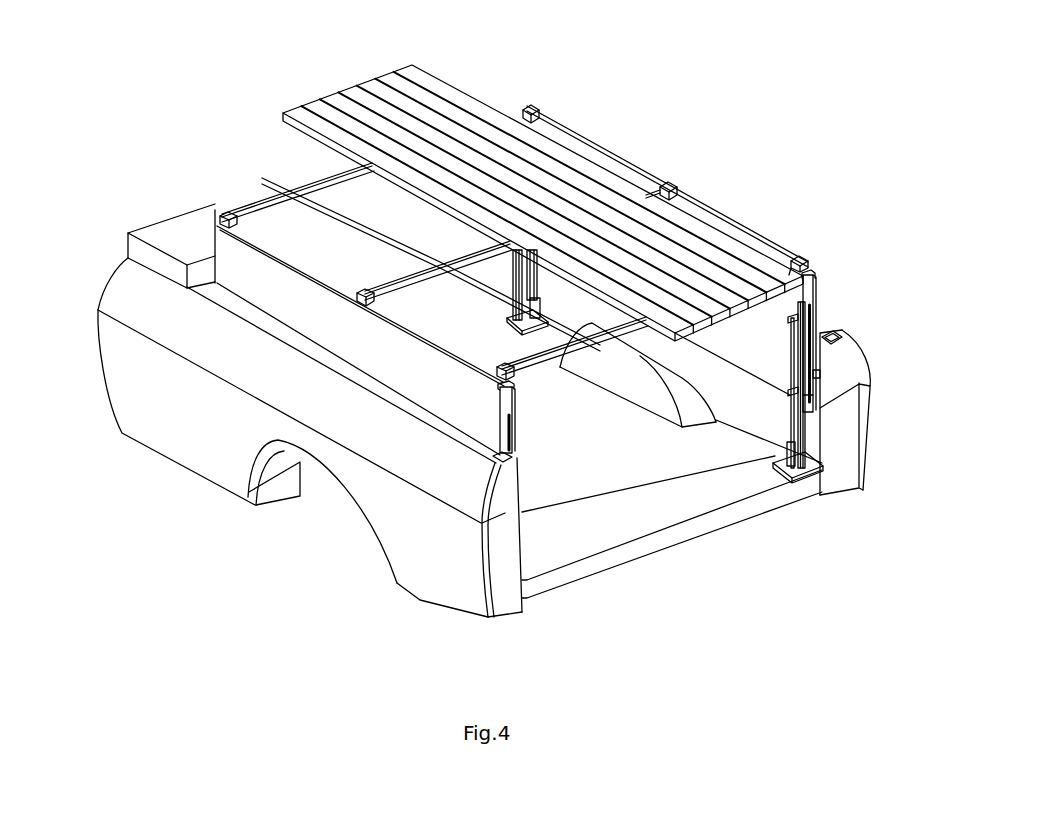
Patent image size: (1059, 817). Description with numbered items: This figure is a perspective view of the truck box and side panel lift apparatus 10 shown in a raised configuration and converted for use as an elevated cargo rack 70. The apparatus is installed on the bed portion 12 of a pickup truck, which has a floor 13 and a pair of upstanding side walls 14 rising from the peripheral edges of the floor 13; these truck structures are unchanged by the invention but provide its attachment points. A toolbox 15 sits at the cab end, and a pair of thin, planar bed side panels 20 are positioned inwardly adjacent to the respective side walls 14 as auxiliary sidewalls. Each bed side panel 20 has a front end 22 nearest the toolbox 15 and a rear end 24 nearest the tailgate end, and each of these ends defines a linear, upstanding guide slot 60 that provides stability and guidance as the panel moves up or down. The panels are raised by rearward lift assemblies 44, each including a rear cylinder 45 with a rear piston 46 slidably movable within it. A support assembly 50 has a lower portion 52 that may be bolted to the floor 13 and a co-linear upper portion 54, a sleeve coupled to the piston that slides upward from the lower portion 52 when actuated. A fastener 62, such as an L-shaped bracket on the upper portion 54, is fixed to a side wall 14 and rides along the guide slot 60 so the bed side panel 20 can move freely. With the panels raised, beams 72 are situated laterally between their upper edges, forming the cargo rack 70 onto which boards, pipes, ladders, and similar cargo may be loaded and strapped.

The truck box and side panel lift apparatus 10 is at (635, 82).
The bed portion 12 is at (145, 483).
The floor 13 is at (590, 535).
The side walls 14 is at (438, 480).
The toolbox 15 is at (138, 182).
The bed side panels 20 is at (257, 285).
The front end 22 is at (208, 242).
The rear end 24 is at (513, 398).
The rearward lift assemblies 44 is at (777, 422).
The rear cylinder 45 is at (758, 438).
The rear piston 46 is at (796, 347).
The support assembly 50 is at (825, 412).
The lower portion 52 is at (812, 452).
The upper portion 54 is at (813, 397).
The guide slot 60 is at (512, 433).
The fastener 62 is at (816, 373).
The cargo rack 70 is at (680, 165).
The beams 72 is at (265, 200).